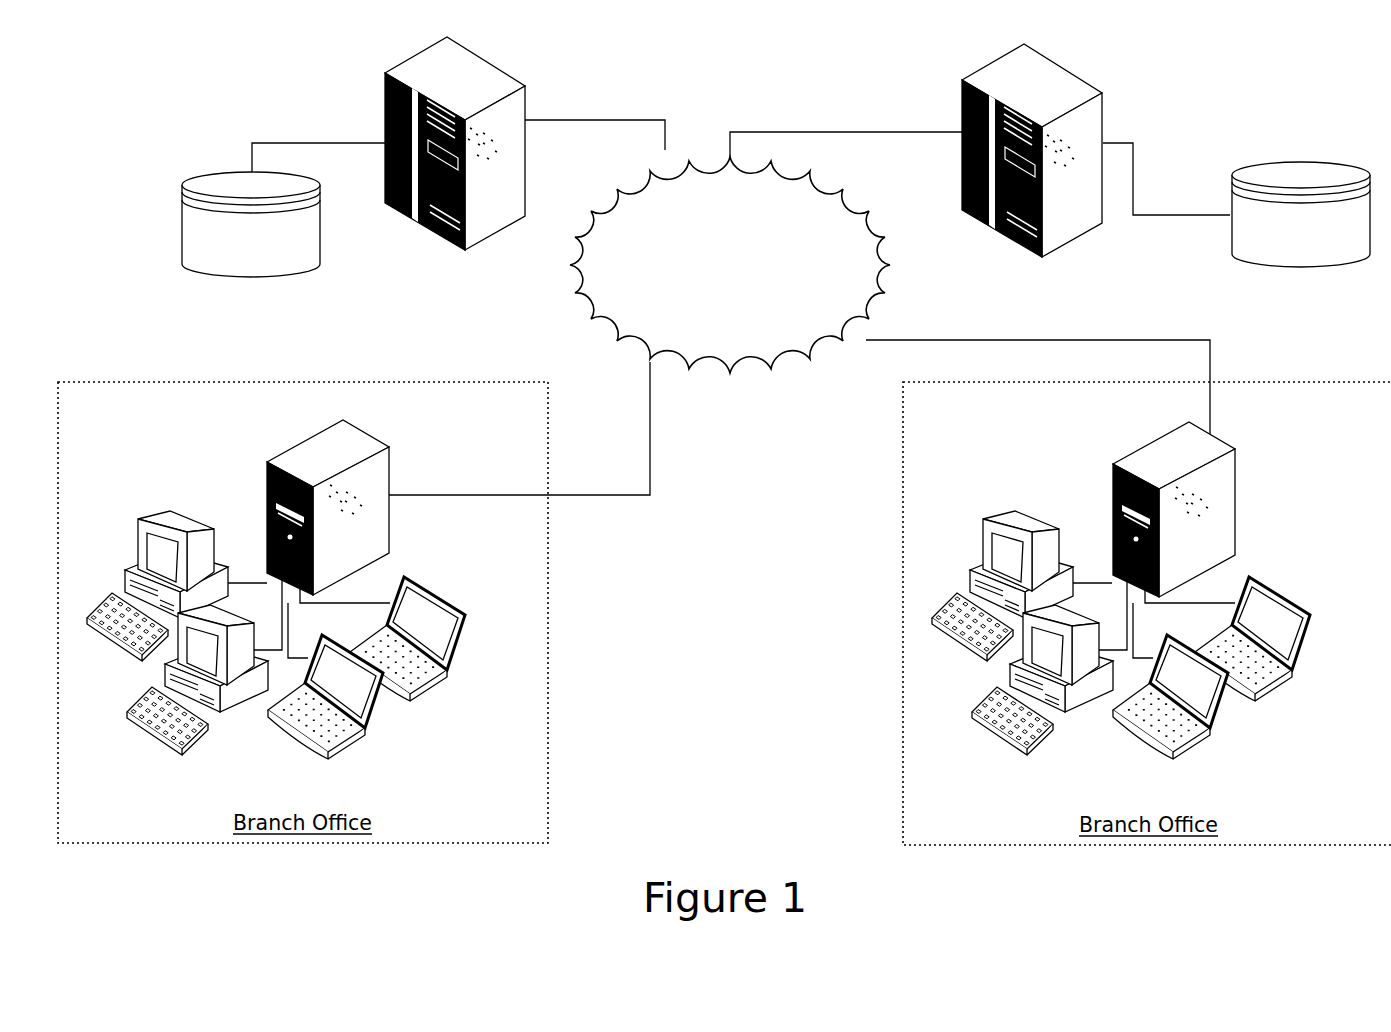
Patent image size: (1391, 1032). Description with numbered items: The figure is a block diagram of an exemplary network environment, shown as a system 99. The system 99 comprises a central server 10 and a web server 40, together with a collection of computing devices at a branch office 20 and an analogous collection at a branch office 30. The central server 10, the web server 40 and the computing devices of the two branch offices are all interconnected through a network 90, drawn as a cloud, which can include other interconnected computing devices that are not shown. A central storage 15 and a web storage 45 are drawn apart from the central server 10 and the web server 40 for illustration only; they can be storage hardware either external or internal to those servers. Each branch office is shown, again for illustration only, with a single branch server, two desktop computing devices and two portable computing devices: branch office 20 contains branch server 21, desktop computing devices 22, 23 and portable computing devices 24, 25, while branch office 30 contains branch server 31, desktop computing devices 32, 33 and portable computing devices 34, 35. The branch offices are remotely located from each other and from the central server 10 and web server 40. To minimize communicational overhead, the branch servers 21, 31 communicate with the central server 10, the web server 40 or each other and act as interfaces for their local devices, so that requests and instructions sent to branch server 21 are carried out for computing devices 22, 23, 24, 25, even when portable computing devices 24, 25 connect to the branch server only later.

The central server 10 is at (407, 63).
The central storage 15 is at (181, 224).
The branch office 20 is at (548, 703).
The branch server 21 is at (285, 452).
The desktop computing device 22 is at (168, 513).
The desktop computing device 23 is at (165, 738).
The portable computing device 24 is at (348, 745).
The portable computing device 25 is at (435, 593).
The branch office 30 is at (903, 703).
The branch server 31 is at (1133, 455).
The desktop computing device 32 is at (1013, 513).
The desktop computing device 33 is at (1010, 738).
The portable computing device 34 is at (1194, 747).
The portable computing device 35 is at (1280, 593).
The web server 40 is at (978, 75).
The web storage 45 is at (1298, 158).
The network 90 is at (692, 150).
The system 99 is at (1245, 97).